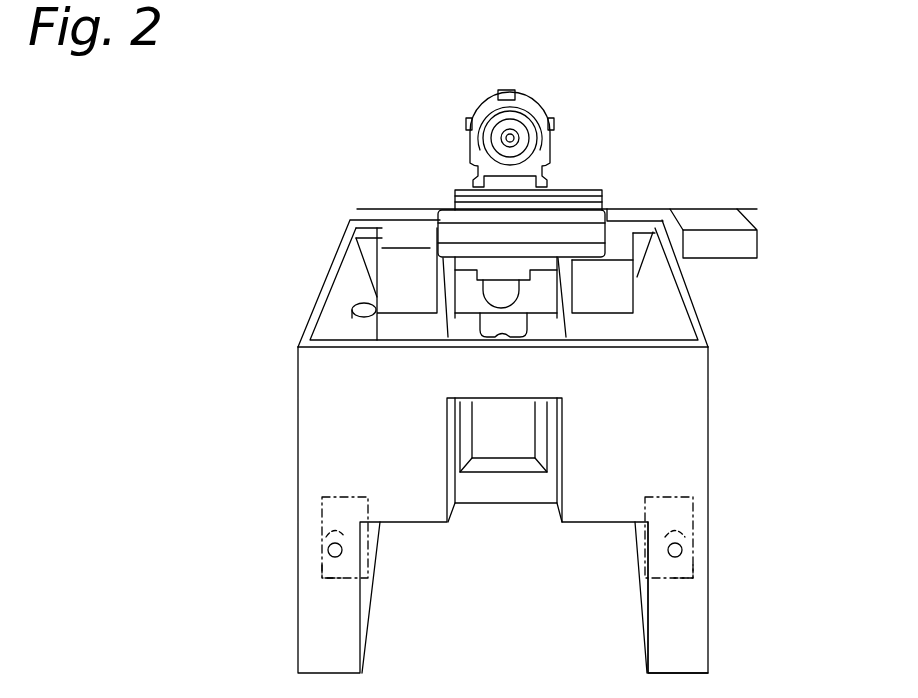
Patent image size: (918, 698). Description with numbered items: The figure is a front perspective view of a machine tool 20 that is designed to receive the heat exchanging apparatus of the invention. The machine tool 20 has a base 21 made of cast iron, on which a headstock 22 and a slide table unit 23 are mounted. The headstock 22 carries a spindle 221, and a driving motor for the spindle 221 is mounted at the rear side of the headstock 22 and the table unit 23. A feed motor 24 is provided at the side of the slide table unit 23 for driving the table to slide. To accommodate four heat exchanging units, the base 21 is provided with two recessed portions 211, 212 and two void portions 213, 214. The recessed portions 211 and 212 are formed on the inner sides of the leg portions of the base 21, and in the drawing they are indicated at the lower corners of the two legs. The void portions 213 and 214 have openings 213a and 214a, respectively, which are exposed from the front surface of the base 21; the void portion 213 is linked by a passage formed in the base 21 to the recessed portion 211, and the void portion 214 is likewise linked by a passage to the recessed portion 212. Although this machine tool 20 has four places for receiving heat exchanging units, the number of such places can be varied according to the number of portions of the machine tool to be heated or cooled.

The machine tool 20 is at (282, 202).
The base 21 is at (690, 417).
The recessed portion 211 is at (640, 517).
The recessed portion 212 is at (328, 503).
The void portion 213 is at (682, 548).
The opening 213a is at (677, 557).
The void portion 214 is at (328, 552).
The opening 214a is at (333, 560).
The headstock 22 is at (532, 92).
The spindle 221 is at (505, 139).
The slide table unit 23 is at (612, 173).
The feed motor 24 is at (723, 202).